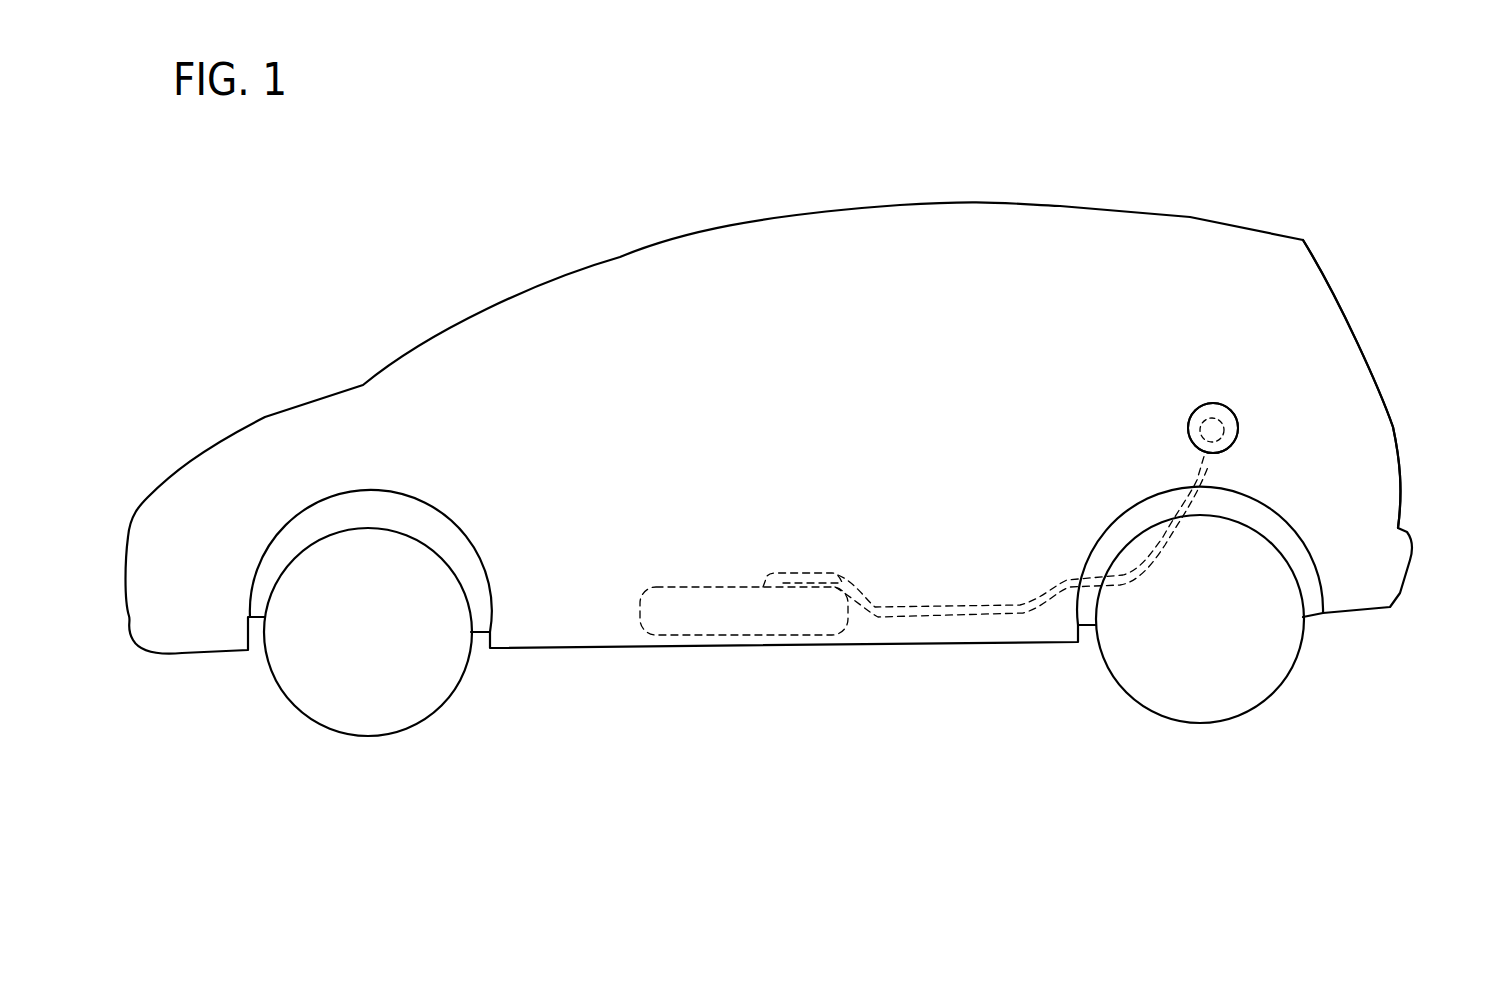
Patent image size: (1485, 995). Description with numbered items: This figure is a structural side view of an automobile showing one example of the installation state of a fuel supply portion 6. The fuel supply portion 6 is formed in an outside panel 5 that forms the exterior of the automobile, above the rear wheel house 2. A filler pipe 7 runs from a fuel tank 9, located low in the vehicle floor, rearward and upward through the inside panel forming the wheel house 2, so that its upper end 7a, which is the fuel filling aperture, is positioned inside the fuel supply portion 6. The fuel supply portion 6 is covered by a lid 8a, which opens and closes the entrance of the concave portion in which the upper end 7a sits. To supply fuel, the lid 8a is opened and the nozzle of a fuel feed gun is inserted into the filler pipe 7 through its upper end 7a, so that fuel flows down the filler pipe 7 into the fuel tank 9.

The wheel house 2 is at (1257, 520).
The outside panel 5 is at (1270, 465).
The fuel supply portion 6 is at (1237, 401).
The filler pipe 7 is at (1157, 487).
The upper end of the filler pipe 7a is at (1240, 428).
The lid 8a is at (1190, 421).
The fuel tank 9 is at (718, 587).